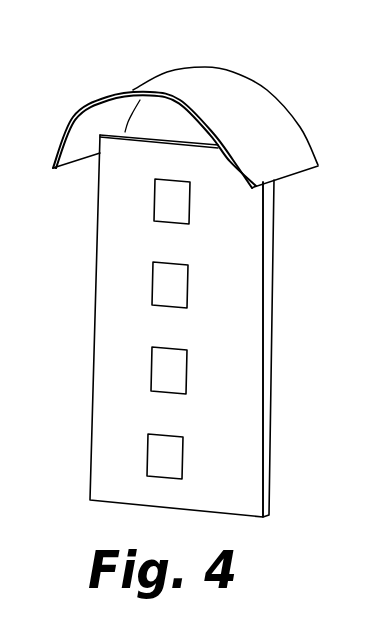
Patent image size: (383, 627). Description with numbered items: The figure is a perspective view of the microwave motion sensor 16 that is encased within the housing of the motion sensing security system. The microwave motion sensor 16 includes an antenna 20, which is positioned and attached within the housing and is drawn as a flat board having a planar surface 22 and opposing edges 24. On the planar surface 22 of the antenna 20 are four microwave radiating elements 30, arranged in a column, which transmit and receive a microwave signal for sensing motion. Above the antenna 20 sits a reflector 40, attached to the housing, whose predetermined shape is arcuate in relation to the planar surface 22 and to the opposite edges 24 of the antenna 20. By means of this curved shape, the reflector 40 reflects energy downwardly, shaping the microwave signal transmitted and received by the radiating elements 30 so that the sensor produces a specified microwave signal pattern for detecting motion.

The microwave motion sensor 16 is at (97, 82).
The reflector 40 is at (237, 102).
The antenna 20 is at (273, 394).
The planar surface 22 is at (108, 427).
The opposing edges 24 is at (273, 297).
The microwave radiating elements 30 is at (157, 201).